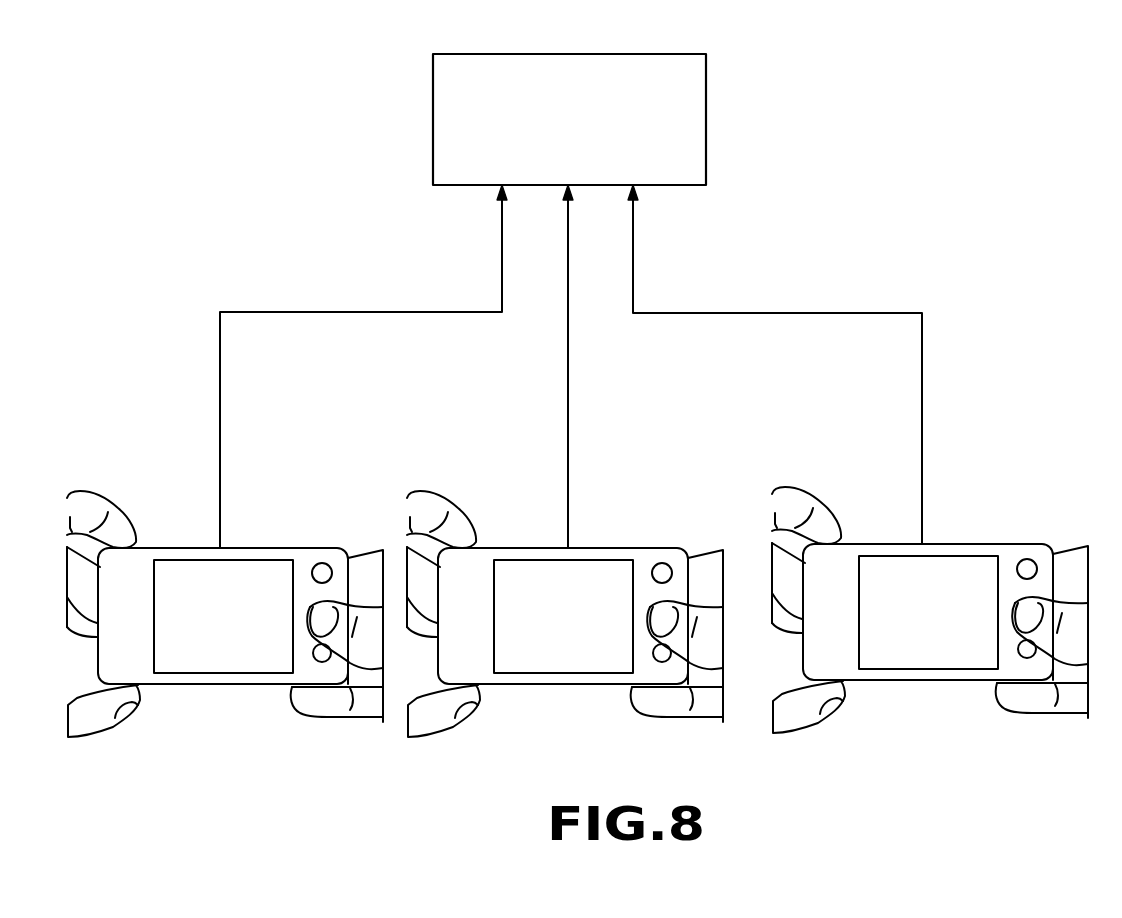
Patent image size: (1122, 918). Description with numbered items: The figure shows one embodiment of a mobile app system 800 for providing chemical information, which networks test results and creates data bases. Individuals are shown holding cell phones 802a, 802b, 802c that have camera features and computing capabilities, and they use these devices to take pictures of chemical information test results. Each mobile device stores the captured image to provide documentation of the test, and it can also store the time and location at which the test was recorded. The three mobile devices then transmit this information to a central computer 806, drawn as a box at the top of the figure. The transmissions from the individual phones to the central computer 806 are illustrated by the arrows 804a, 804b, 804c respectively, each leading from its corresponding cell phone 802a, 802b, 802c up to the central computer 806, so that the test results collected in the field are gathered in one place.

The mobile app system 800 is at (783, 76).
The cell phone 802a is at (255, 632).
The cell phone 802b is at (597, 632).
The cell phone 802c is at (963, 622).
The arrow 804a is at (303, 312).
The arrow 804b is at (568, 402).
The arrow 804c is at (738, 313).
The central computer 806 is at (600, 95).